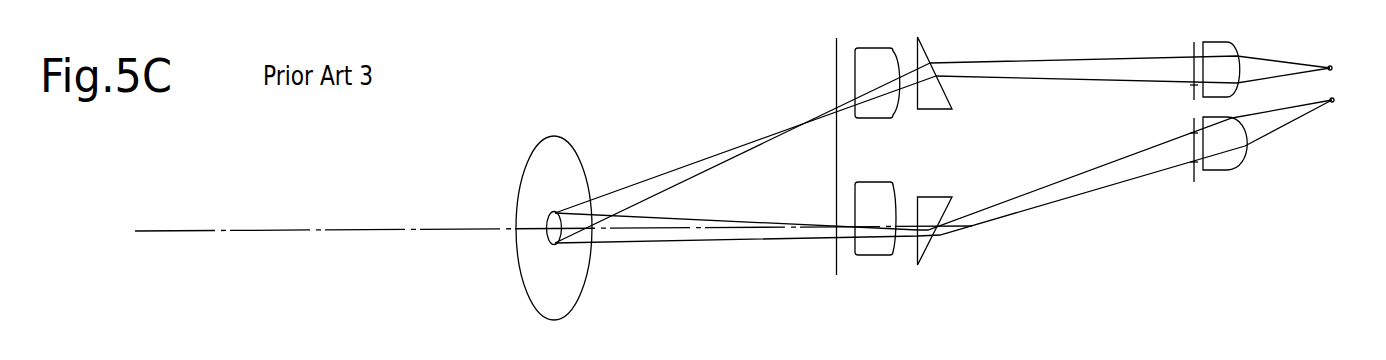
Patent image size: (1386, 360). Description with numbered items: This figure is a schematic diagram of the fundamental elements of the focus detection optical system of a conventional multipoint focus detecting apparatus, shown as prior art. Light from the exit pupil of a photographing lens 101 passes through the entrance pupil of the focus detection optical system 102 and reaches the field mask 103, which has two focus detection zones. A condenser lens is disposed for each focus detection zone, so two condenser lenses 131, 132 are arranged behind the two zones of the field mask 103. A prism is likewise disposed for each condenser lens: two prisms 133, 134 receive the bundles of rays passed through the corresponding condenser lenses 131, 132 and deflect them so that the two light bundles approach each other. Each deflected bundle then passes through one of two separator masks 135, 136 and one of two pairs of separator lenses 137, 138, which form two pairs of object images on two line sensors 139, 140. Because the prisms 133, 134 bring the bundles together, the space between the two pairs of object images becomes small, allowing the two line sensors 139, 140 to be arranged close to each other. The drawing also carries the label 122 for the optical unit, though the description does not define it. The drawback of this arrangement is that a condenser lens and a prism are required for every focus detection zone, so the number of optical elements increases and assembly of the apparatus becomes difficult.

The exit pupil of a photographing lens 101 is at (558, 160).
The entrance pupil of the focus detection optical system 102 is at (555, 222).
The field mask 103 is at (835, 83).
The optical detection unit 122 is at (905, 8).
The condenser lens 131 is at (872, 62).
The condenser lens 132 is at (878, 197).
The prism 133 is at (923, 60).
The prism 134 is at (932, 207).
The separator mask 135 is at (1192, 50).
The separator mask 136 is at (1193, 173).
The pair of separator lenses 137 is at (1220, 50).
The pair of separator lenses 138 is at (1220, 170).
The line sensor 139 is at (1330, 65).
The line sensor 140 is at (1332, 105).